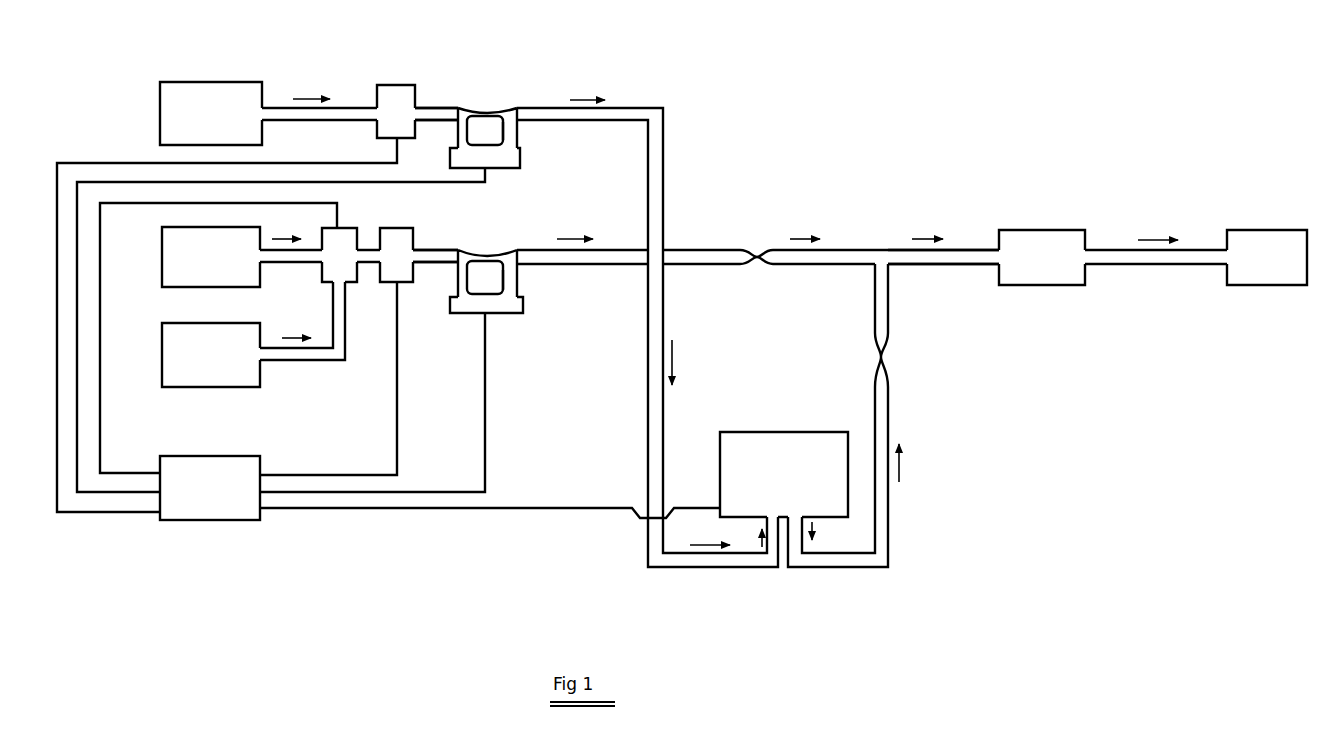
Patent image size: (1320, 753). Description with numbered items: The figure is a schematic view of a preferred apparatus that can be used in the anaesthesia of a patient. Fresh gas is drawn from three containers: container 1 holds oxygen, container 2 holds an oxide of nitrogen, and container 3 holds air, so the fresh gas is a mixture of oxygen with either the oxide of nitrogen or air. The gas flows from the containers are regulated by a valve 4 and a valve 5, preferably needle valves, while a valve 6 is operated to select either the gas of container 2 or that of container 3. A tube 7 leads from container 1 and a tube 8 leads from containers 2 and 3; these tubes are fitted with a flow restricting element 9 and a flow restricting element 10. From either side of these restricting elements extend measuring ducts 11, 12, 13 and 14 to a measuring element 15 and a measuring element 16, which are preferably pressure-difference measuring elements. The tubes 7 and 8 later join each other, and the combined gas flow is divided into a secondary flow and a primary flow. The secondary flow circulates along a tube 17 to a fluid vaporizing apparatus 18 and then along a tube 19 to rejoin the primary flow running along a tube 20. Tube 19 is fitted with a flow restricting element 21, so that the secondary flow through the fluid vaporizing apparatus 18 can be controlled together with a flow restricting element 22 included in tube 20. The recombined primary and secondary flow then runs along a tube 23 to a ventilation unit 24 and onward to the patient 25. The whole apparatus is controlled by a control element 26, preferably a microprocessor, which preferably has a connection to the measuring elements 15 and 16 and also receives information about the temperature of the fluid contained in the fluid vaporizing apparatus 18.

The container 1 is at (180, 120).
The container 2 is at (180, 270).
The container 3 is at (187, 368).
The valve 4 is at (396, 103).
The valve 5 is at (399, 248).
The valve 6 is at (344, 250).
The tube 7 is at (440, 115).
The tube 8 is at (441, 257).
The flow restricting element 9 is at (487, 118).
The flow restricting element 10 is at (490, 260).
The measuring duct 11 is at (462, 135).
The measuring duct 12 is at (510, 128).
The measuring duct 13 is at (462, 282).
The measuring duct 14 is at (508, 278).
The measuring element 15 is at (510, 155).
The measuring element 16 is at (503, 318).
The tube 17 is at (653, 422).
The fluid vaporizing apparatus 18 is at (755, 448).
The tube 19 is at (883, 502).
The tube 20 is at (835, 260).
The flow restricting element 21 is at (882, 357).
The flow restricting element 22 is at (757, 258).
The tube 23 is at (963, 258).
The ventilation unit 24 is at (1046, 250).
The patient 25 is at (1265, 245).
The control element 26 is at (226, 470).